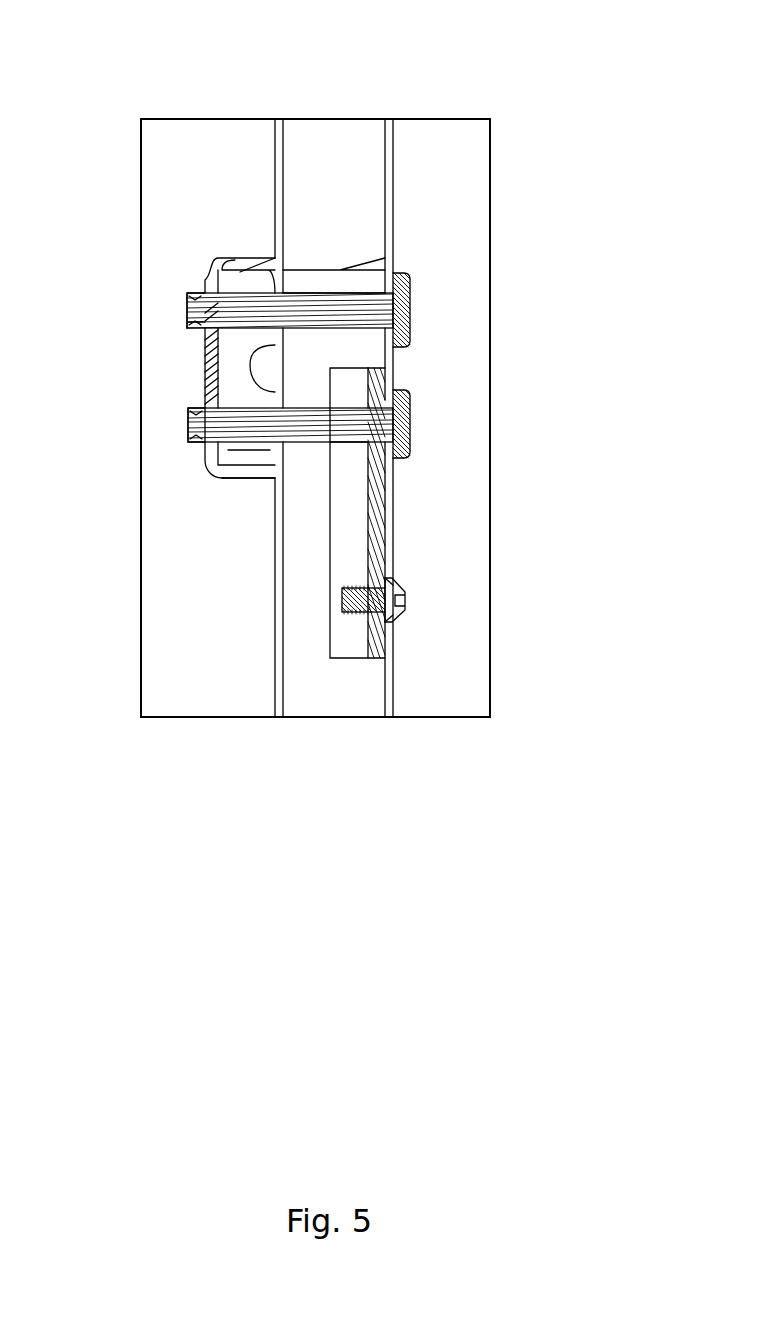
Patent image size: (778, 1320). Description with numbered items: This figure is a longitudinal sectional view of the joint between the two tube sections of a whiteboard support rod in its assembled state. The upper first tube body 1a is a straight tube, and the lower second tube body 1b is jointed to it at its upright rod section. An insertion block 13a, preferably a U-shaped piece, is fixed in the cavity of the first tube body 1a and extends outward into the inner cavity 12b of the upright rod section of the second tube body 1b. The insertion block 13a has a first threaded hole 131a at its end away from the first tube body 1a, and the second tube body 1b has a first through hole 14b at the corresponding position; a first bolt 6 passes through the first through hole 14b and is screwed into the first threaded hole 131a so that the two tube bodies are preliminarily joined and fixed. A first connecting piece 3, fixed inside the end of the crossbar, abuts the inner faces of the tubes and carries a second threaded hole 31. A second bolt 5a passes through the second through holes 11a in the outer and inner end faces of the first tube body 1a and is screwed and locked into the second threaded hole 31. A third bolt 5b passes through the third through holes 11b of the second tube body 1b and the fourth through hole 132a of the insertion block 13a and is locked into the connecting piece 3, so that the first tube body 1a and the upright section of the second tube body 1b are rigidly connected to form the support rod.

The inner cavity 12b is at (335, 145).
The first tube body 1a is at (388, 188).
The second tube body 1b is at (388, 680).
The second through holes 11a is at (375, 291).
The first connecting piece 3 is at (222, 263).
The second threaded hole 31 is at (192, 296).
The second bolt 5a is at (376, 309).
The third bolt 5b is at (390, 430).
The third through holes 11b is at (200, 411).
The insertion block 13a is at (340, 388).
The first through hole 14b is at (392, 588).
The first threaded hole 131a is at (385, 592).
The fourth through hole 132a is at (368, 450).
The first bolt 6 is at (378, 602).